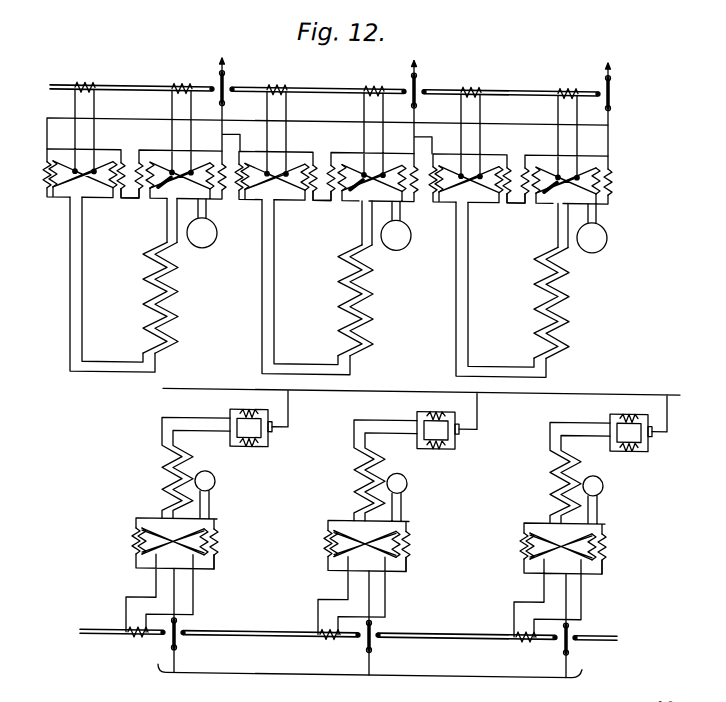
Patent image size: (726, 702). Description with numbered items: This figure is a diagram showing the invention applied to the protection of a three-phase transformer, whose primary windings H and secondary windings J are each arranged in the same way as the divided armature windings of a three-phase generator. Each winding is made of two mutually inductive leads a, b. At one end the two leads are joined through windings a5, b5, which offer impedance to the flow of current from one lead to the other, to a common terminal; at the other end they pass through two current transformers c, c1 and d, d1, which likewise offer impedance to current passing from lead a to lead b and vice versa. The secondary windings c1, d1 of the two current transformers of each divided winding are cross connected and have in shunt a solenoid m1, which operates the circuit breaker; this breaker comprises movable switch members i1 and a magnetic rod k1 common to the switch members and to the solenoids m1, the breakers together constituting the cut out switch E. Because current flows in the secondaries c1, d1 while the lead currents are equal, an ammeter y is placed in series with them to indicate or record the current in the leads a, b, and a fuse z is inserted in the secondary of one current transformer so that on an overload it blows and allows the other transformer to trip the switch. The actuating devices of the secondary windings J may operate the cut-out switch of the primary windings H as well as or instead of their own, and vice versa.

The solenoid m1 is at (182, 84).
The magnetic rod k1 is at (132, 91).
The movable switch members i1 is at (226, 70).
The current transformer primary winding c is at (47, 163).
The current transformer secondary winding c1 is at (53, 197).
The current transformer primary winding d is at (139, 158).
The current transformer secondary winding d1 is at (121, 198).
The ammeter y is at (216, 238).
The lead a is at (150, 293).
The lead b is at (376, 383).
The primary windings H is at (339, 287).
The fuse z is at (357, 194).
The impedance winding a5 is at (238, 407).
The impedance winding b5 is at (250, 446).
The secondary windings J is at (413, 450).
The cut out switch E is at (370, 682).